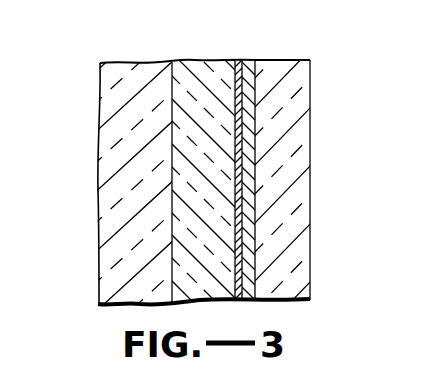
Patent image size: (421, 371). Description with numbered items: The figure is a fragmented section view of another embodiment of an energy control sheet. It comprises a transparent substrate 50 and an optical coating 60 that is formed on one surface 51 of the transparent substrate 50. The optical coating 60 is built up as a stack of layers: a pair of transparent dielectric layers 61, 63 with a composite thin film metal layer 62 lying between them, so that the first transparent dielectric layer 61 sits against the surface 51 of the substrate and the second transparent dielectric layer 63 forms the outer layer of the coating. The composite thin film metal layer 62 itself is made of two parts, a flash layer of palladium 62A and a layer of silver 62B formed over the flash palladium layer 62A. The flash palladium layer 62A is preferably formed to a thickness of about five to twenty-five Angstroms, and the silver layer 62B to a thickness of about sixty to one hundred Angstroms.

The transparent substrate 50 is at (117, 67).
The surface 51 is at (175, 62).
The transparent dielectric layer 61 is at (203, 67).
The optical coating 60 is at (223, 52).
The composite thin film metal layer 62 is at (303, 163).
The flash layer of palladium 62A is at (242, 78).
The layer of silver 62B is at (253, 108).
The transparent dielectric layer 63 is at (303, 147).